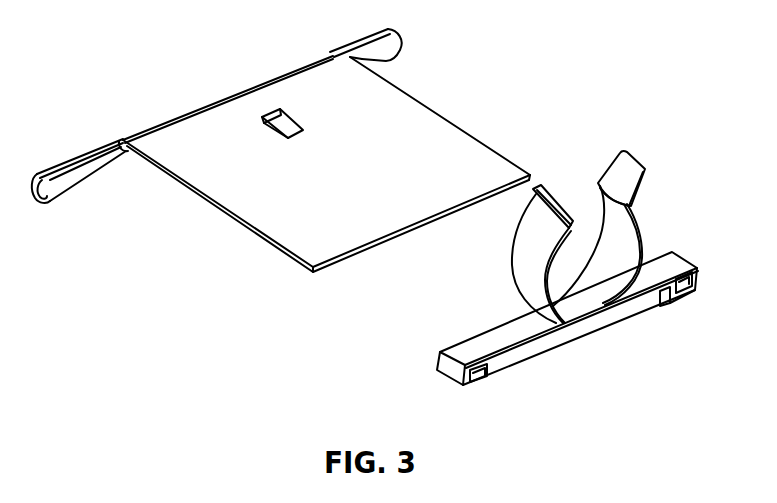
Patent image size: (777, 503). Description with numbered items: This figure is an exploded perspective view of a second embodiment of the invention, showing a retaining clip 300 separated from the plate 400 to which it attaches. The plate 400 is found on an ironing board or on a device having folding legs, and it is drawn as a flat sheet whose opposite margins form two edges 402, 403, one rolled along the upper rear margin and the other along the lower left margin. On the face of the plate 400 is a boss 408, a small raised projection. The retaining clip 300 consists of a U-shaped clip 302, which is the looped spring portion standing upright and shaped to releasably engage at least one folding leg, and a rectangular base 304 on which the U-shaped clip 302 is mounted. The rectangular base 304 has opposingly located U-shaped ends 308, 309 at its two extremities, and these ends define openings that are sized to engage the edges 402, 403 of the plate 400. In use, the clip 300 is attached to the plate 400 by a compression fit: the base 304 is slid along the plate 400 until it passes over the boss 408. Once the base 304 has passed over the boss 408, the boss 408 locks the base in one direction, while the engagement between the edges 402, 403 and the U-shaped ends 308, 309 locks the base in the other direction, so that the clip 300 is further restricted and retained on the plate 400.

The retaining clip 300 is at (640, 218).
The U-shaped clip 302 is at (618, 178).
The rectangular base 304 is at (498, 338).
The U-shaped end 308 is at (458, 369).
The U-shaped end 309 is at (678, 265).
The plate 400 is at (437, 125).
The edge 402 is at (402, 82).
The edge 403 is at (193, 186).
The boss 408 is at (277, 112).